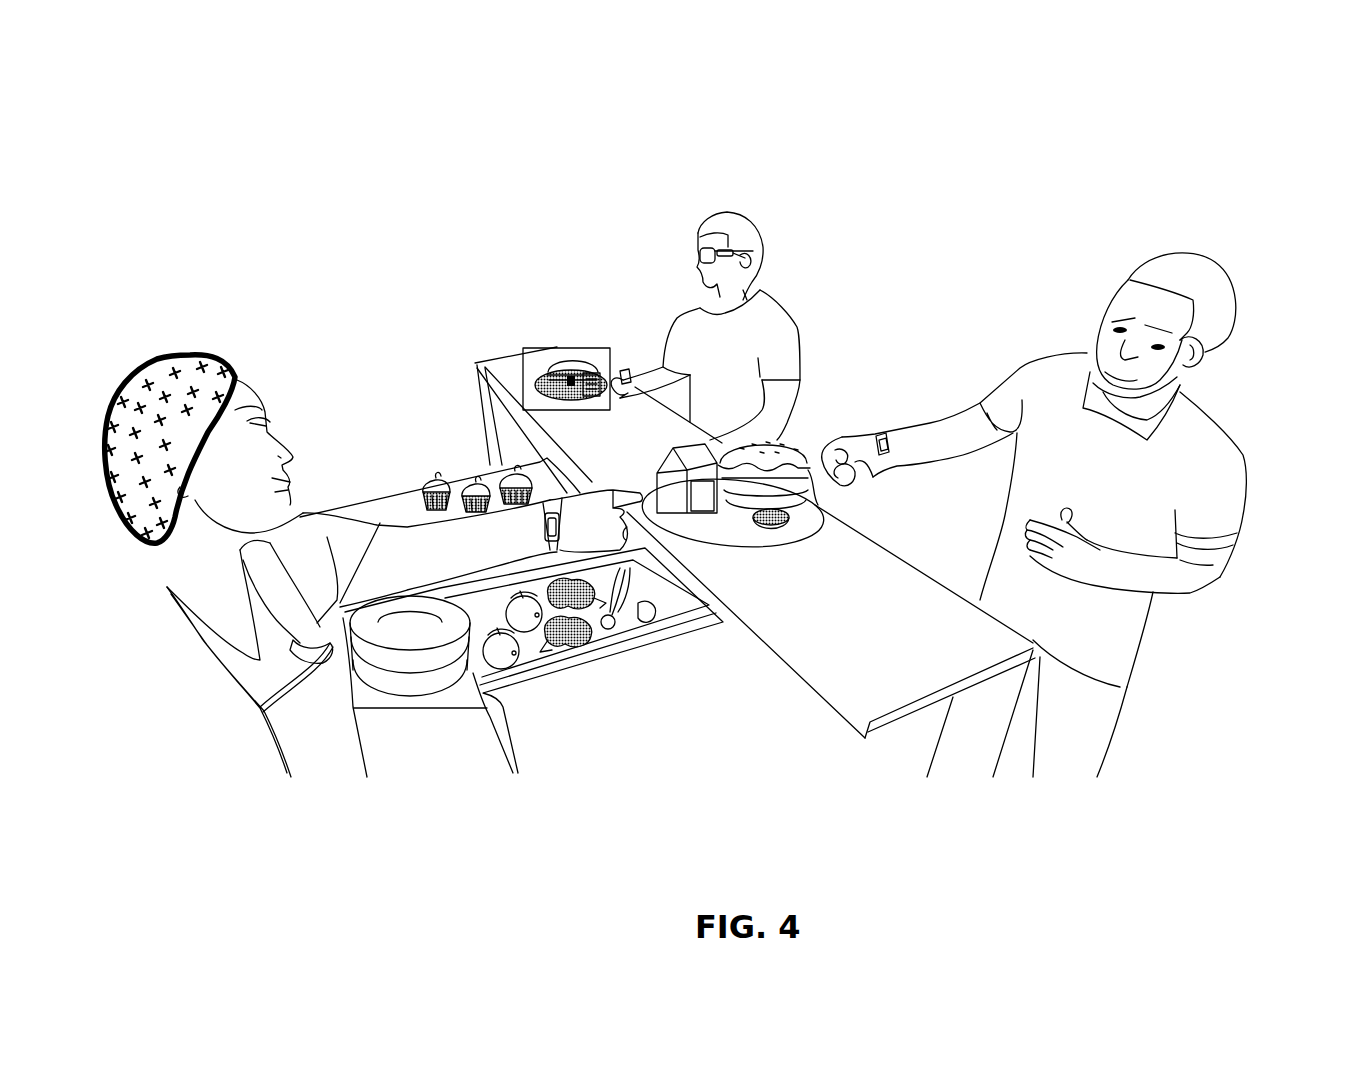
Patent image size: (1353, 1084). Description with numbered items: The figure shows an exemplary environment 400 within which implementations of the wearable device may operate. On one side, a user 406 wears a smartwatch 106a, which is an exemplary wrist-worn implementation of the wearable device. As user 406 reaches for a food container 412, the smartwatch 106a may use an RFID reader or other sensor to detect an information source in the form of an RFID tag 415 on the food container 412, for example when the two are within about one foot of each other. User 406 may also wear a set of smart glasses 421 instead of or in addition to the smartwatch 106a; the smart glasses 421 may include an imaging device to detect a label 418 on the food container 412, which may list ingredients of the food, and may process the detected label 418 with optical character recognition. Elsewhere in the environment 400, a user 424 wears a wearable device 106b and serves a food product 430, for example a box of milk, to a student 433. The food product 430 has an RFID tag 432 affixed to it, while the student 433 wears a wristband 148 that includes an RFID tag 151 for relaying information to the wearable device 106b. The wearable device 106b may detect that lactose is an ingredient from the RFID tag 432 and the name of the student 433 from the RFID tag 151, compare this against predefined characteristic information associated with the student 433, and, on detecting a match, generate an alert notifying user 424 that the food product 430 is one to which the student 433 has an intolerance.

The environment 400 is at (328, 148).
The user 424 is at (287, 440).
The smart glasses 421 is at (700, 252).
The user 406 is at (750, 297).
The food container 412 is at (560, 353).
The label 418 is at (603, 350).
The RFID tag 415 is at (557, 360).
The smartwatch 106a is at (630, 376).
The wearable device 106b is at (580, 492).
The RFID tag 432 is at (658, 475).
The food product 430 is at (727, 500).
The wristband 148 is at (890, 427).
The RFID tag 151 is at (887, 453).
The student 433 is at (1210, 410).